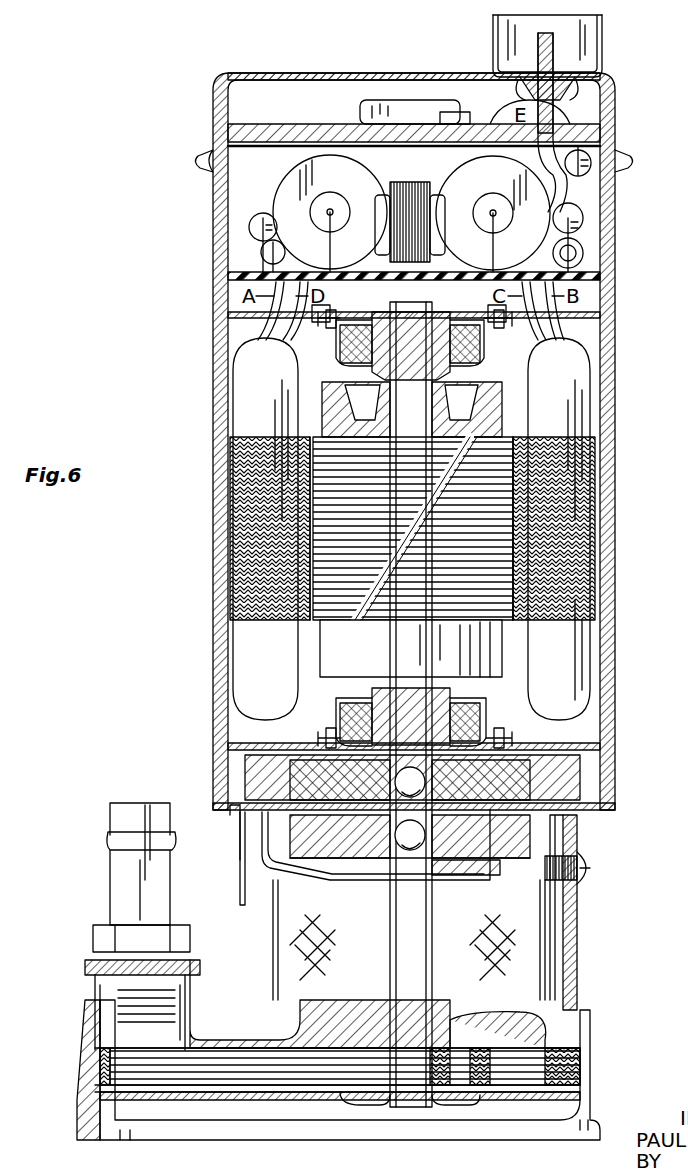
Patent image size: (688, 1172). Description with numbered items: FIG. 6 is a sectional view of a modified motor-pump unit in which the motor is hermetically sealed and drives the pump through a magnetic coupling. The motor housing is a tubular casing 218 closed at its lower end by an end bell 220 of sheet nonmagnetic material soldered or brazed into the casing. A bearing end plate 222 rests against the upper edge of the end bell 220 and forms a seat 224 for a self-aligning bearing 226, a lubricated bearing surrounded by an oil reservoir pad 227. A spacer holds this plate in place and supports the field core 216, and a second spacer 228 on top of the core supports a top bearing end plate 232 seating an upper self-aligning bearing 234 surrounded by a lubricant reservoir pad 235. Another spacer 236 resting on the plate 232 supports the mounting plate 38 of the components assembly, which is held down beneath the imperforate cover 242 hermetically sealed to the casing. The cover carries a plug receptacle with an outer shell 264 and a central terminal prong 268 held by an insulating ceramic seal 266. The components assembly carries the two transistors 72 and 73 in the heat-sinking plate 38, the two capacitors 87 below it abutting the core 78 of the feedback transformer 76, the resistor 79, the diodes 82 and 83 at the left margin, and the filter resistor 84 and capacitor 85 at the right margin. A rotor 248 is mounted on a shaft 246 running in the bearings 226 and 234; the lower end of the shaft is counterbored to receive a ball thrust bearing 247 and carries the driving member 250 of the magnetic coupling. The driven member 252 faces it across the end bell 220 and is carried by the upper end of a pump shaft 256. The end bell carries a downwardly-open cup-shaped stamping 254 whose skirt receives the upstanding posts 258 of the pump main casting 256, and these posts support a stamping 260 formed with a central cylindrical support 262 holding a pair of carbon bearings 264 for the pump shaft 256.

The mounting plate 38 is at (297, 133).
The transistor 72 is at (437, 118).
The transistor 73 is at (470, 122).
The transformer 76 is at (388, 268).
The core 78 is at (418, 188).
The resistor 79 is at (578, 170).
The diode 82 is at (260, 216).
The diode 83 is at (262, 248).
The filter resistor 84 is at (575, 218).
The capacitor 85 is at (582, 255).
The capacitor 87 is at (343, 192).
The field core 216 is at (583, 500).
The tubular casing 218 is at (613, 400).
The end bell 220 is at (600, 786).
The bearing end plate 222 is at (598, 768).
The seat 224 is at (450, 694).
The self-aligning bearing 226 is at (470, 713).
The oil reservoir pad 227 is at (345, 705).
The second spacer 228 is at (595, 342).
The top bearing end plate 232 is at (585, 316).
The upper self-aligning bearing 234 is at (462, 355).
The lubricant reservoir pad 235 is at (343, 340).
The spacer 236 is at (213, 165).
The cover 242 is at (435, 78).
The shaft 246 is at (408, 690).
The ball thrust bearing 247 is at (415, 768).
The rotor 248 is at (412, 590).
The driving member 250 is at (615, 806).
The driven member 252 is at (515, 868).
The cup-shaped stamping 254 is at (585, 898).
The pump shaft 256 is at (590, 1052).
The upstanding posts 258 is at (578, 940).
The stamping 260 is at (312, 868).
The central cylindrical support 262 is at (455, 930).
The bearings 264 is at (493, 60).
The insulating ceramic seal 266 is at (575, 78).
The central terminal prong 268 is at (553, 40).